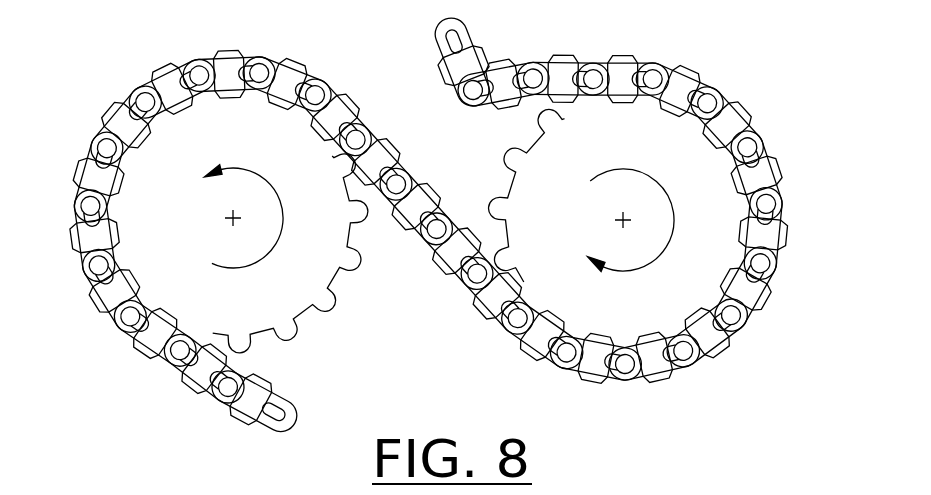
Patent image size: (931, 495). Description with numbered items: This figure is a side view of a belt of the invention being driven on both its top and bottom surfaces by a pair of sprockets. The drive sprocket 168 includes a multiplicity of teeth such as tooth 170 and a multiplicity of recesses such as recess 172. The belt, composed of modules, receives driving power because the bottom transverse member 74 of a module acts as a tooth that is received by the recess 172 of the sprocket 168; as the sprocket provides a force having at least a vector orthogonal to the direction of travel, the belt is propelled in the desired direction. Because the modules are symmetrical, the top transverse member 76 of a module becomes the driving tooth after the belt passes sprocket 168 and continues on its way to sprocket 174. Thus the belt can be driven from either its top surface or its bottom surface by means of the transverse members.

The bottom transverse member 74 is at (506, 107).
The top transverse member 76 is at (498, 67).
The drive sprocket 168 is at (700, 293).
The tooth 170 is at (517, 157).
The recess 172 is at (537, 155).
The sprocket 174 is at (313, 262).